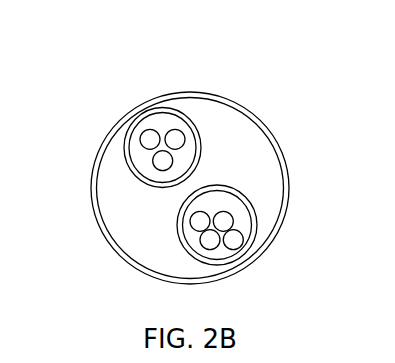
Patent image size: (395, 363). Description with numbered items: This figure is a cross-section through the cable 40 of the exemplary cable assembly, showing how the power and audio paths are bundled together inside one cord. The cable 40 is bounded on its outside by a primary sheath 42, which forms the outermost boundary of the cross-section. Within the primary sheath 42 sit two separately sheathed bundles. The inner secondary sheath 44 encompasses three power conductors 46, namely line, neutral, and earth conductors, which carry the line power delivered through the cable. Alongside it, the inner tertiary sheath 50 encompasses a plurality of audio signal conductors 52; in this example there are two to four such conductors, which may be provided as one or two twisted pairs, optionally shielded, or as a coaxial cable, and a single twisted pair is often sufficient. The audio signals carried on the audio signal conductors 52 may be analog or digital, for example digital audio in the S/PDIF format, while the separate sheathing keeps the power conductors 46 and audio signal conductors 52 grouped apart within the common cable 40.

The cable 40 is at (115, 83).
The primary sheath 42 is at (247, 110).
The inner secondary sheath 44 is at (125, 152).
The power conductors 46 is at (160, 125).
The inner tertiary sheath 50 is at (256, 236).
The audio signal conductors 52 is at (213, 209).